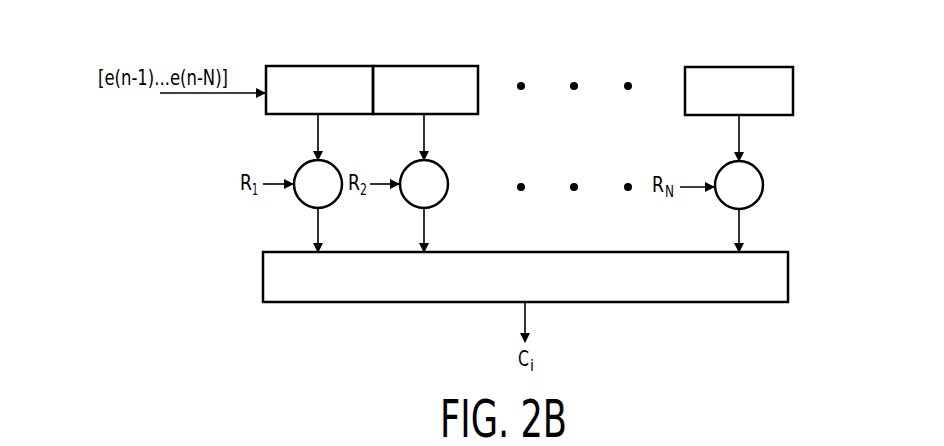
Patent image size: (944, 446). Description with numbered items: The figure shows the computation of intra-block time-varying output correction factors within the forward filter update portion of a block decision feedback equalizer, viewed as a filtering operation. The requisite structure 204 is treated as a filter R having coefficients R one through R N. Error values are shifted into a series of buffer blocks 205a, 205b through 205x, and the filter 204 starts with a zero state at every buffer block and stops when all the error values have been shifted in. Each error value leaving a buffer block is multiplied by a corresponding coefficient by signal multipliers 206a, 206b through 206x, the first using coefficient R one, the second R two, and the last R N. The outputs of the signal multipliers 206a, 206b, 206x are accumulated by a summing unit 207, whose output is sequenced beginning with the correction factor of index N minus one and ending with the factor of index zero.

The filter 204 is at (598, 151).
The buffer block 205a is at (309, 66).
The buffer block 205b is at (419, 66).
The buffer block 205x is at (723, 67).
The signal multiplier 206a is at (334, 166).
The signal multiplier 206b is at (440, 166).
The signal multiplier 206x is at (754, 167).
The summing unit 207 is at (475, 252).